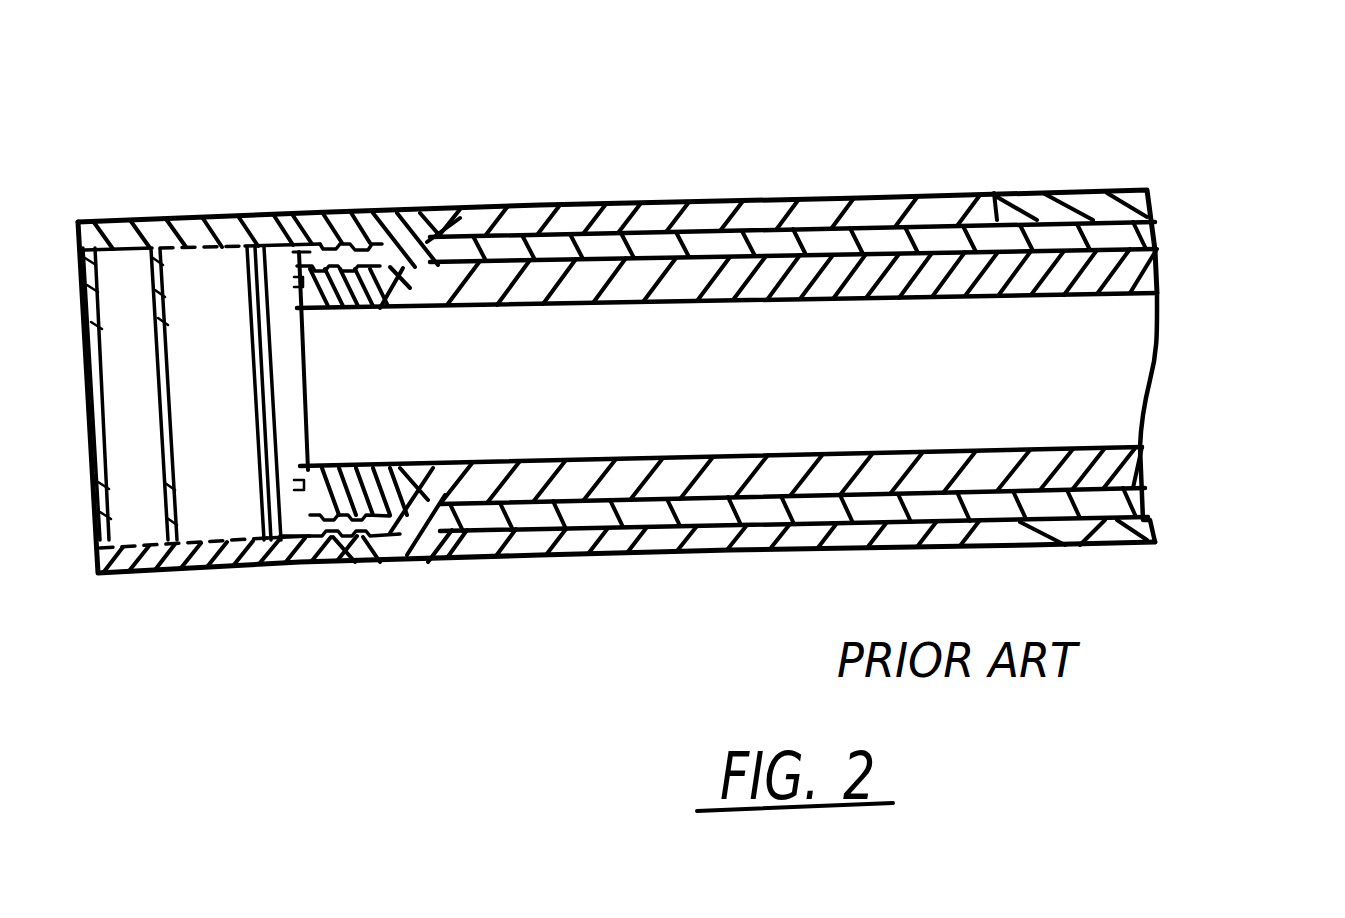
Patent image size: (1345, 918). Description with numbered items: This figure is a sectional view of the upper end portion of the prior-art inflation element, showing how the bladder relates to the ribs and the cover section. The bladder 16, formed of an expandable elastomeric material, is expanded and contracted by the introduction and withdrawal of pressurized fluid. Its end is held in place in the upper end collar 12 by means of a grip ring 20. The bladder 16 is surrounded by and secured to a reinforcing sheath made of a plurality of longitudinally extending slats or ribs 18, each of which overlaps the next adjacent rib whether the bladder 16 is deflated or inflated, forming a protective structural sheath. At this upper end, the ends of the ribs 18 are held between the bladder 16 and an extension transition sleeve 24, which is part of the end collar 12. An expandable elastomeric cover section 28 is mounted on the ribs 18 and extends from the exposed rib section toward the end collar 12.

The upper end collar 12 is at (512, 200).
The bladder 16 is at (1160, 263).
The ribs 18 is at (1157, 224).
The grip ring 20 is at (333, 535).
The extension transition sleeve 24 is at (885, 198).
The cover section 28 is at (1068, 190).